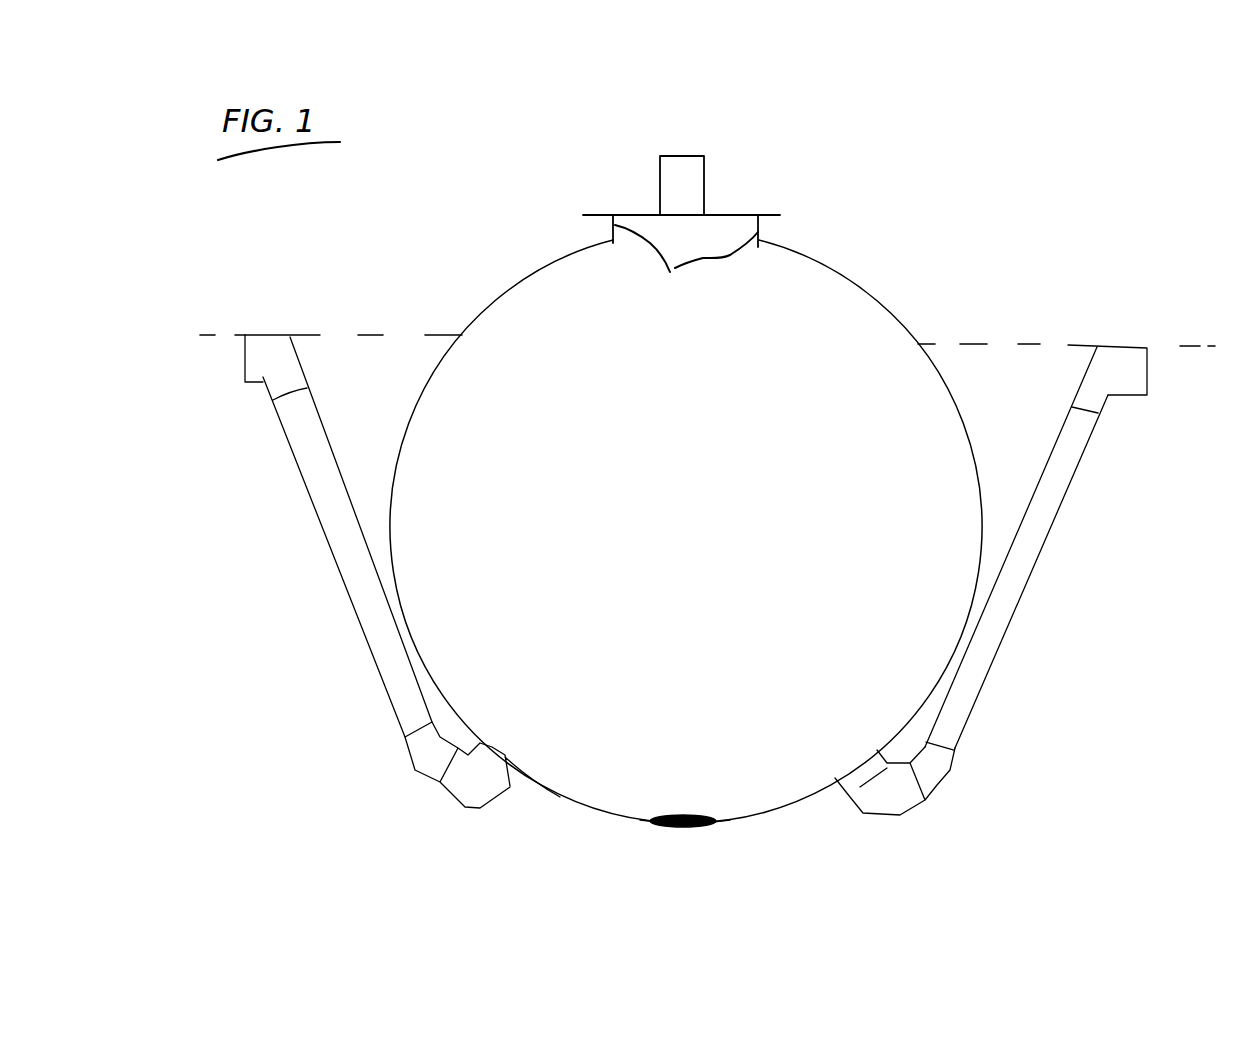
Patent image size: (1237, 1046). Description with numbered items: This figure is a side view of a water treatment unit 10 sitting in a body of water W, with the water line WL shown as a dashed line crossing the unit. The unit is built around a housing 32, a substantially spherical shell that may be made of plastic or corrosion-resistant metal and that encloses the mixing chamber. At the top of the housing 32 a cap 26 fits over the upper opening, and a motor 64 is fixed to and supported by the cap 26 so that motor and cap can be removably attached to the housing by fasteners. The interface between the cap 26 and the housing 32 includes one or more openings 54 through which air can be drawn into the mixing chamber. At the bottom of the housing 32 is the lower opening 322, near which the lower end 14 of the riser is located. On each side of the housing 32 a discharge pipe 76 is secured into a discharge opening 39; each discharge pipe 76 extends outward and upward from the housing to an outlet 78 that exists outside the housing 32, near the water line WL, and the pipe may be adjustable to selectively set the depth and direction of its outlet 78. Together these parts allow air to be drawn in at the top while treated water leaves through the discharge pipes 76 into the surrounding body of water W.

The water treatment unit 10 is at (919, 190).
The lower end 14 is at (678, 828).
The cap 26 is at (747, 212).
The housing 32 is at (880, 303).
The discharge opening 39 is at (505, 757).
The opening 54 is at (686, 272).
The motor 64 is at (682, 185).
The discharge pipe 76 is at (387, 675).
The outlet 78 is at (244, 361).
The lower opening 322 is at (717, 822).
The body of water W is at (437, 339).
The water line WL is at (985, 340).